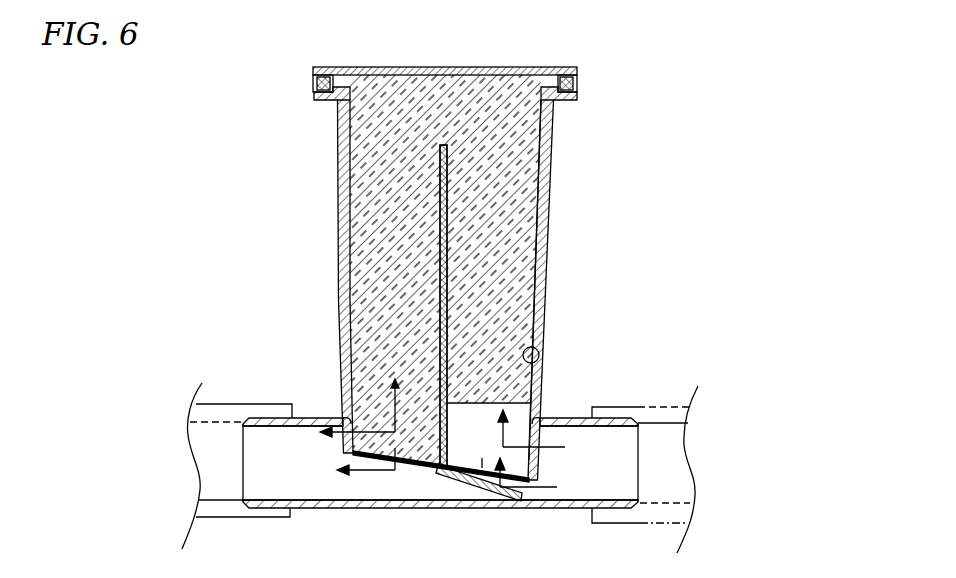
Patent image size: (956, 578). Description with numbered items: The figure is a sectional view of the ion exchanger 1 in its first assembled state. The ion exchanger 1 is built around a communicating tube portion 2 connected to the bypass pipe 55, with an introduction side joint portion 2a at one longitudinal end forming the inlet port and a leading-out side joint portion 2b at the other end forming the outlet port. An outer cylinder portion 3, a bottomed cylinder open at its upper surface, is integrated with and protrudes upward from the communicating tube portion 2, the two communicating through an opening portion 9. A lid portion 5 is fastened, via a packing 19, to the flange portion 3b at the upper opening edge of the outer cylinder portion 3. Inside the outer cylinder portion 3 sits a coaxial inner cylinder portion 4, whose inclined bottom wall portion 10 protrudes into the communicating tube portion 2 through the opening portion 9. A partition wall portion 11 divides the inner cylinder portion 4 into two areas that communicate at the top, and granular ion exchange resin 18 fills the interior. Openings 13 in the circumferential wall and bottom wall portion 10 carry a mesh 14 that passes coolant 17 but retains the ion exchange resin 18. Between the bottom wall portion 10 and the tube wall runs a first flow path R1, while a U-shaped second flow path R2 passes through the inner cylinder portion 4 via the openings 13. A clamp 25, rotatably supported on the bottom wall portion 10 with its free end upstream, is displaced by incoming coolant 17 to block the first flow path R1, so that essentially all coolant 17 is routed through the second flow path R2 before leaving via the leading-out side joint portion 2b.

The ion exchanger 1 is at (480, 66).
The communicating tube portion 2 is at (560, 508).
The introduction side joint portion 2a is at (612, 509).
The leading-out side joint portion 2b is at (262, 508).
The outer cylinder portion 3 is at (548, 273).
The flange portion 3b is at (322, 101).
The inner cylinder portion 4 is at (550, 182).
The lid portion 5 is at (500, 68).
The opening portion 9 is at (545, 433).
The bottom wall portion 10 is at (408, 457).
The partition wall portion 11 is at (448, 239).
The opening portion 13 is at (352, 412).
The mesh 14 is at (356, 456).
The coolant 17 is at (285, 470).
The ion exchange resin 18 is at (385, 210).
The packing 19 is at (316, 74).
The clamp 25 is at (445, 478).
The bypass pipe 55 is at (246, 400).
The first flow path R1 is at (484, 490).
The second flow path R2 is at (540, 346).